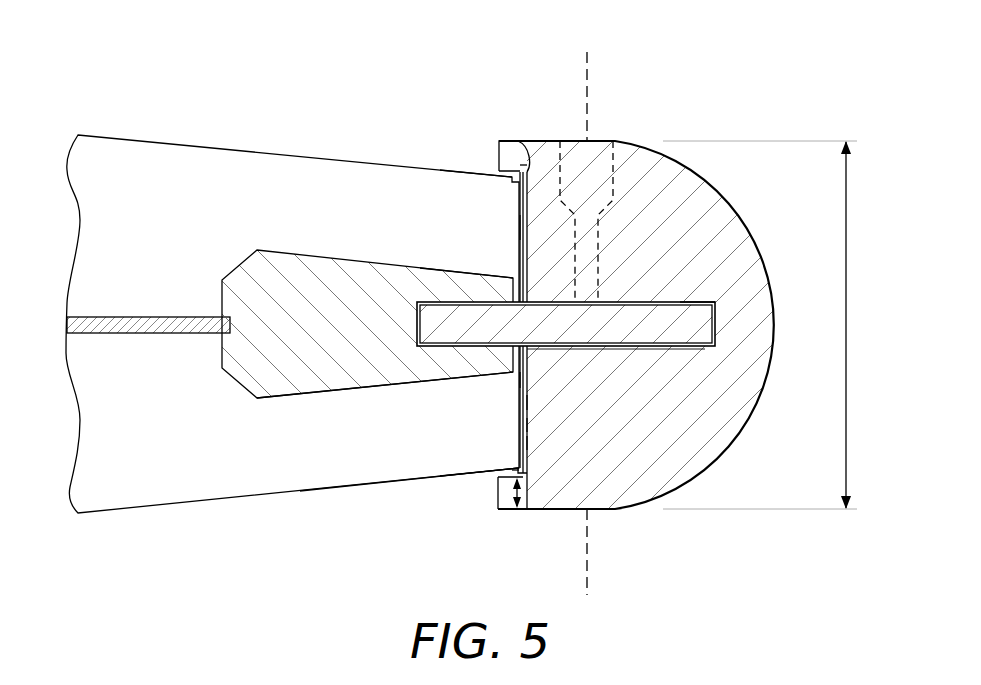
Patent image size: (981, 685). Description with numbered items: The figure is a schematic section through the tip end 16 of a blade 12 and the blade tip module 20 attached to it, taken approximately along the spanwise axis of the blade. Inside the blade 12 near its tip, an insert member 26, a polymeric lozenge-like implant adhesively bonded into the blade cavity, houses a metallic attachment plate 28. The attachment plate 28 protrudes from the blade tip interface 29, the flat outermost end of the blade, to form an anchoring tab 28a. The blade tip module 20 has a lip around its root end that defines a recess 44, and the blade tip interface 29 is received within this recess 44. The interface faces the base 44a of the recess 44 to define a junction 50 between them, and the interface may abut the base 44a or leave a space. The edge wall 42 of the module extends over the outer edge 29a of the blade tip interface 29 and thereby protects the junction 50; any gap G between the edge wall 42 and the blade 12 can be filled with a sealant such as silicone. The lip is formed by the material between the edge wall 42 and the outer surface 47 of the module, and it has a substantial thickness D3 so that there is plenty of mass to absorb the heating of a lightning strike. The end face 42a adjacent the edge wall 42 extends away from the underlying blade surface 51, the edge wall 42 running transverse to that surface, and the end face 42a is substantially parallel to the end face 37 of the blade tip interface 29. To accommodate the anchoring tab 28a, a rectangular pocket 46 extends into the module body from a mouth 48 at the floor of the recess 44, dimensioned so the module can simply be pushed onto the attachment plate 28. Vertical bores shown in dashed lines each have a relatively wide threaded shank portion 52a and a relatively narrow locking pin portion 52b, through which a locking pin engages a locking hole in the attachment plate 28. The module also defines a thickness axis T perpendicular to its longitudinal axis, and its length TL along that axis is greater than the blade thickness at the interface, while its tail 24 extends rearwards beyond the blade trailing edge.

The blade 12 is at (190, 495).
The tip end 16 is at (322, 493).
The blade tip module 20 is at (724, 447).
The tail 24 is at (127, 334).
The insert member 26 is at (272, 393).
The attachment plate 28 is at (440, 352).
The anchoring tab 28a is at (700, 332).
The blade tip interface 29 is at (527, 443).
The outer edge 29a is at (516, 141).
The end face 37 is at (527, 425).
The edge wall 42 is at (520, 228).
The end face 42a is at (499, 150).
The recess 44 is at (522, 380).
The base 44a is at (523, 228).
The pocket 46 is at (700, 302).
The outer surface 47 is at (567, 510).
The mouth 48 is at (513, 278).
The junction 50 is at (530, 403).
The blade surface 51 is at (480, 180).
The shank portion 52a is at (615, 185).
The locking pin portion 52b is at (600, 255).
The gap G is at (488, 480).
The thickness of the lip D3 is at (525, 510).
The length along the thickness axis TL is at (771, 325).
The thickness axis T is at (588, 323).